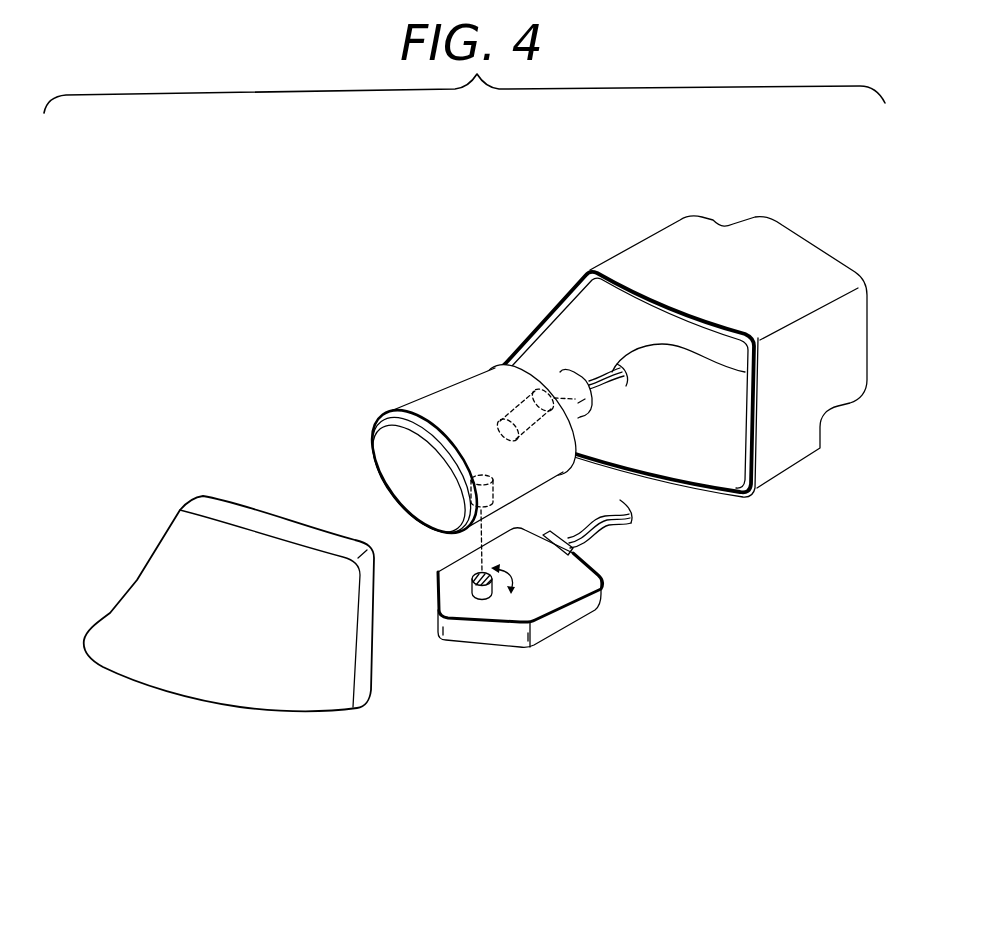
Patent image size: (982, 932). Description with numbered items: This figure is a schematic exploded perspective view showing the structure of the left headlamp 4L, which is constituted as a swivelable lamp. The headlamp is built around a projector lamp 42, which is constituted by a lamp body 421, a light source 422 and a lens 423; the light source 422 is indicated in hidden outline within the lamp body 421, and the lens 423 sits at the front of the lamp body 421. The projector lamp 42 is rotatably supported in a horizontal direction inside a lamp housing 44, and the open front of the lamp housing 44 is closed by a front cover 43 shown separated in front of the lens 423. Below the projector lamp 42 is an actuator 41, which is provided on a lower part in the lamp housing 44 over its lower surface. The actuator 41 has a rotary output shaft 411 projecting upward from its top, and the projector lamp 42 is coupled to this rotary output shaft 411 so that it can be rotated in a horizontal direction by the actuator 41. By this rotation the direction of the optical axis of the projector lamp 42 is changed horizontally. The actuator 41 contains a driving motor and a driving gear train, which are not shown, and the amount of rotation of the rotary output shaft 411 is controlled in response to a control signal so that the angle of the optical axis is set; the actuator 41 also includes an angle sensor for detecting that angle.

The left headlamp 4L is at (483, 248).
The actuator 41 is at (572, 604).
The rotary output shaft 411 is at (482, 597).
The projector lamp 42 is at (429, 422).
The lamp body 421 is at (430, 402).
The light source 422 is at (515, 412).
The lens 423 is at (381, 456).
The front cover 43 is at (283, 694).
The lamp housing 44 is at (775, 457).